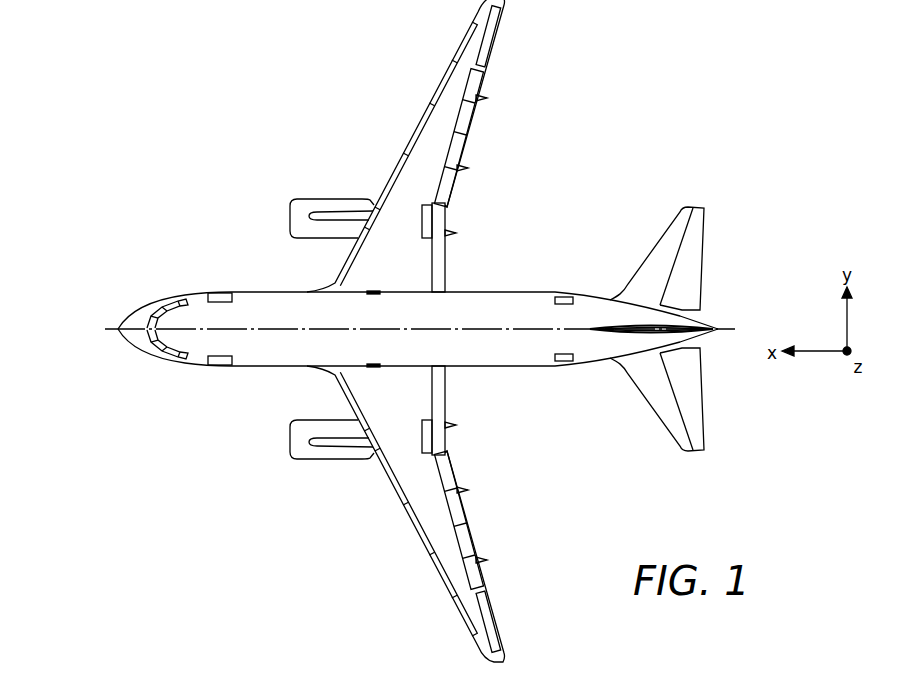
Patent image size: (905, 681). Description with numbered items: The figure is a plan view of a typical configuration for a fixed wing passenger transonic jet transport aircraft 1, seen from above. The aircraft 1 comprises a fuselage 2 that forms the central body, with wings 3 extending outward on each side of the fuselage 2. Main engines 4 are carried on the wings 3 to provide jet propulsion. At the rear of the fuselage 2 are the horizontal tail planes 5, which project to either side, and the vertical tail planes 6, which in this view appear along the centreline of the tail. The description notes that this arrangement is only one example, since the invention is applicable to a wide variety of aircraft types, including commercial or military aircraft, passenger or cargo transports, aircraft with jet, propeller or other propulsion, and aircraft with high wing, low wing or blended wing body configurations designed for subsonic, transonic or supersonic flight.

The aircraft 1 is at (158, 113).
The fuselage 2 is at (232, 348).
The wings 3 is at (397, 222).
The main engines 4 is at (293, 198).
The horizontal tail planes 5 is at (660, 258).
The vertical tail planes 6 is at (662, 327).